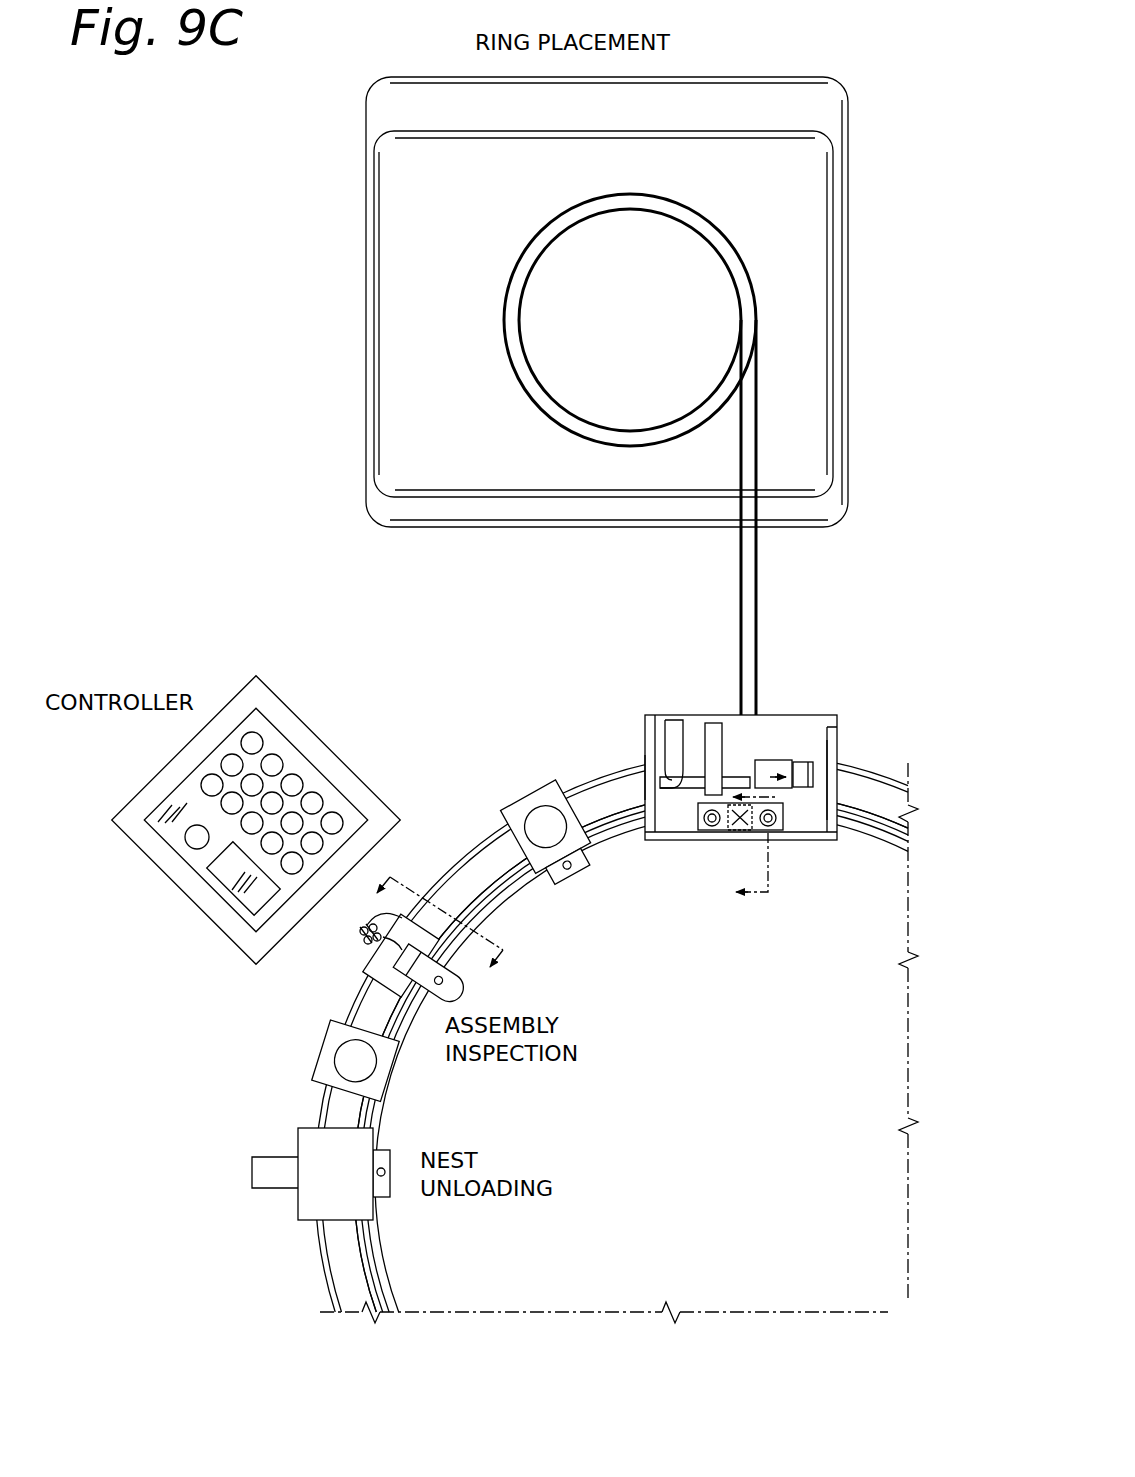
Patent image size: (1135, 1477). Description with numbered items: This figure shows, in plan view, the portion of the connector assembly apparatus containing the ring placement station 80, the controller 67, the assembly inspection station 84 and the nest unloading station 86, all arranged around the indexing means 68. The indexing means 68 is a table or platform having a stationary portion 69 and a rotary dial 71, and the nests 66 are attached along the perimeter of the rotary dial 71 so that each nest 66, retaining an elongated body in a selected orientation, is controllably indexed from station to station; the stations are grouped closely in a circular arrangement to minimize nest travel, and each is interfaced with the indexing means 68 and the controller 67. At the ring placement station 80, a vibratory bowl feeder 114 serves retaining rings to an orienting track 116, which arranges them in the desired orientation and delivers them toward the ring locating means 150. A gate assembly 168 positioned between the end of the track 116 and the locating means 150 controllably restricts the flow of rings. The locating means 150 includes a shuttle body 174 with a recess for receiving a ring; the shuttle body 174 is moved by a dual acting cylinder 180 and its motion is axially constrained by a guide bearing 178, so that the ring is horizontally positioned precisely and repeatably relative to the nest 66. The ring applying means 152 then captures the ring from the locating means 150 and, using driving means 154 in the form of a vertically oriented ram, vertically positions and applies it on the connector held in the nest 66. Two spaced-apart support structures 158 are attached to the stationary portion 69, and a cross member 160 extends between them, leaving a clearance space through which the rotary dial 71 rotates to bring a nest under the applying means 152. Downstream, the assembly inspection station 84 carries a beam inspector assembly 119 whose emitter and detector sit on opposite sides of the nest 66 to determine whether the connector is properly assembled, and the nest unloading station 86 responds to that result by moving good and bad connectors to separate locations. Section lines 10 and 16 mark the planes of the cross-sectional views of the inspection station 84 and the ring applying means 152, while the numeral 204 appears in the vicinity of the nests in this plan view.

The ring placement station 80 is at (323, 170).
The vibratory bowl feeder 114 is at (502, 321).
The orienting track 116 is at (741, 592).
The ring locating means 150 is at (812, 736).
The guide bearing 178 is at (708, 740).
The dual acting cylinder 180 is at (668, 745).
The gate assembly 168 is at (778, 750).
The support structures 158 is at (834, 766).
The shuttle body 174 is at (652, 786).
The cross member 160 is at (667, 842).
The driving means 154 is at (747, 842).
The ring applying means 152 is at (806, 858).
The section line 16- 16 is at (774, 841).
The trailing portion 204 is at (522, 800).
The assembly inspection station 84 is at (347, 973).
The beam inspector assembly 119 is at (347, 945).
The section line 10- 10 is at (431, 933).
The nest 66 is at (562, 884).
The nest unloading station 86 is at (270, 1218).
The controller 67 is at (196, 932).
The indexing means 68 is at (313, 1300).
The stationary portion 69 is at (335, 1253).
The rotary dial 71 is at (440, 1298).